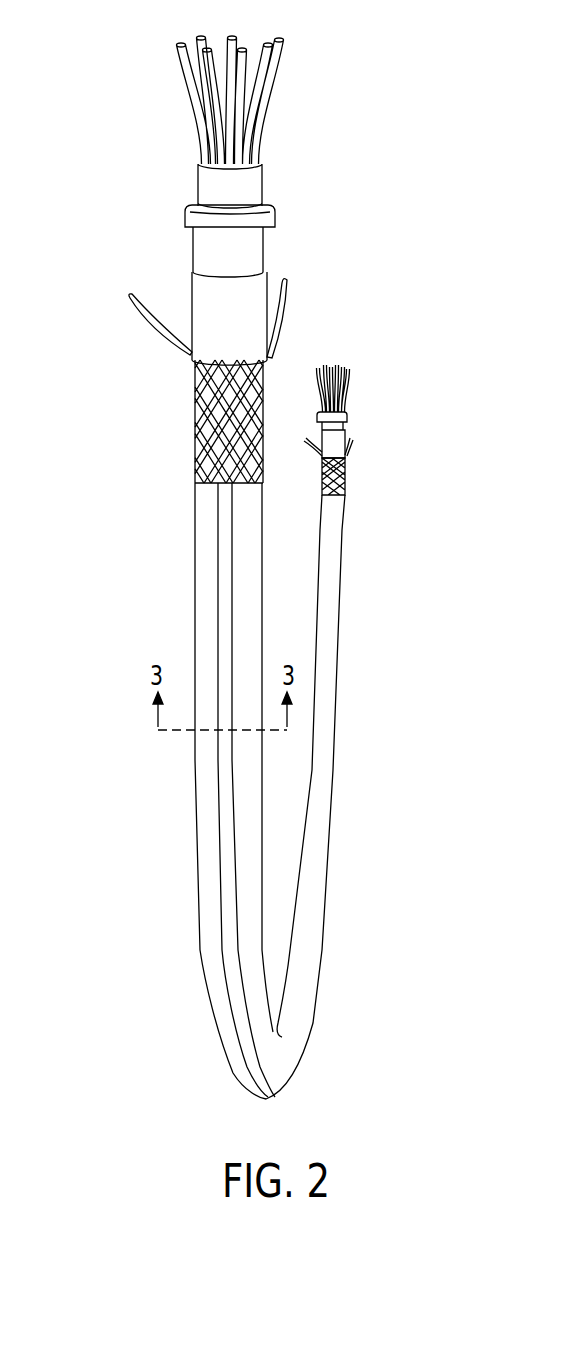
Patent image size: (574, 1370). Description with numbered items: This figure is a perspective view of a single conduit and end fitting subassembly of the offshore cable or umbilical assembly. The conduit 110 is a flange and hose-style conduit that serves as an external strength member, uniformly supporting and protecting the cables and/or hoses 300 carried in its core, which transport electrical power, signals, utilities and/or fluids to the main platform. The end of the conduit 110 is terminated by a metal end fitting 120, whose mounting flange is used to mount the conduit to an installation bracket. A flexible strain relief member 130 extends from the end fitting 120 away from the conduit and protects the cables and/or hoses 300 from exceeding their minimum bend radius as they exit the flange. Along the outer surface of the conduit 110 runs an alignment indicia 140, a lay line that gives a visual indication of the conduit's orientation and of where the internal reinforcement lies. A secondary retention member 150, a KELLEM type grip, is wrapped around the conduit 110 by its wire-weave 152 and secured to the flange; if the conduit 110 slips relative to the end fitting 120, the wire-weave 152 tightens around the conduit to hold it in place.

The cables and/or hoses 300 is at (272, 104).
The strain relief member 130 is at (207, 182).
The end fitting 120 is at (253, 248).
The secondary retention member 150 is at (268, 363).
The wire-weave 152 is at (195, 420).
The conduit 110 is at (226, 791).
The alignment indicia 140 is at (225, 612).